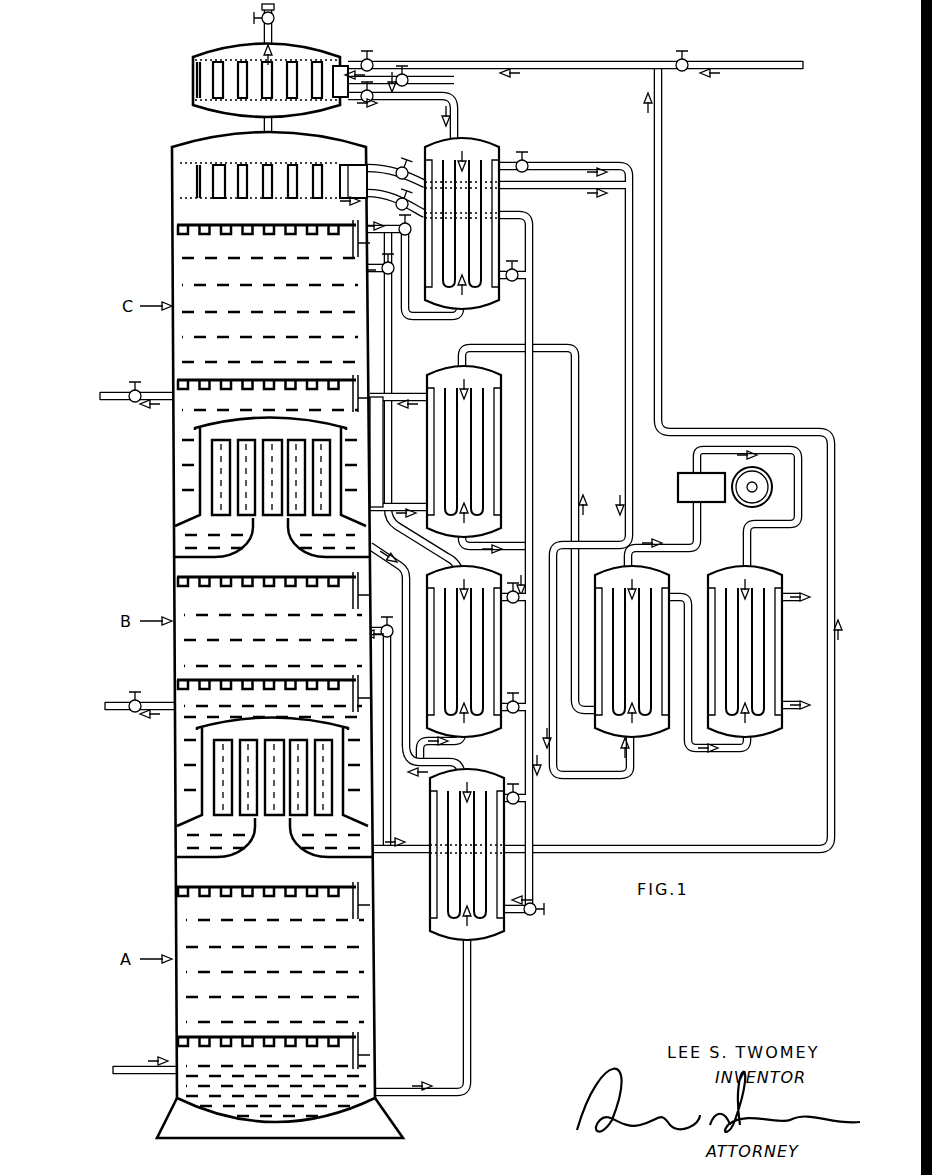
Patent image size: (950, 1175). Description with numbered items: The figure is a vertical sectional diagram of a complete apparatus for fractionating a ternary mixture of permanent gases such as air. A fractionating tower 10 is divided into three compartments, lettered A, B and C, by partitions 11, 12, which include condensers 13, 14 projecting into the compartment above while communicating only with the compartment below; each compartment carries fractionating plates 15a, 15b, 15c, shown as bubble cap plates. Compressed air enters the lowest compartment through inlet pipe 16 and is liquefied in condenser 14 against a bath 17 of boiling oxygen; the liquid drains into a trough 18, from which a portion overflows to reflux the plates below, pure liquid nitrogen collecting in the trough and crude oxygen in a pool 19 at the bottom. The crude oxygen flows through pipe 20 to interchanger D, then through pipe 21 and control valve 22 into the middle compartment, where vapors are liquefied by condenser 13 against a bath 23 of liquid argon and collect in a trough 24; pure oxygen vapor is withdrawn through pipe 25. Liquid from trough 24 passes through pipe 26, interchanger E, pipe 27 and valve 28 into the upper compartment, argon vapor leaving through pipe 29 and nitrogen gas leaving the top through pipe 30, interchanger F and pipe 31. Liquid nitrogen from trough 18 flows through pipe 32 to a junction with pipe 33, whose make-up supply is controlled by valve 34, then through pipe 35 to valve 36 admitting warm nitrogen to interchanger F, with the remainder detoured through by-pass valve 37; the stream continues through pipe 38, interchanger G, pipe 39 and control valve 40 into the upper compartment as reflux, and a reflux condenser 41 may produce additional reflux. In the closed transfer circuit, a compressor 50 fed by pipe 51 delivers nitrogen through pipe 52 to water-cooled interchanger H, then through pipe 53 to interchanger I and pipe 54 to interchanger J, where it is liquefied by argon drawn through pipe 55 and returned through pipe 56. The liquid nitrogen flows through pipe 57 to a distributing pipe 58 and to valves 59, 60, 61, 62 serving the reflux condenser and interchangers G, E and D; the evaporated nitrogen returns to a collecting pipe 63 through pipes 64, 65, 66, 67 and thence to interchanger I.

The fractionating tower 10 is at (200, 137).
The partition 11 is at (198, 520).
The partition 12 is at (205, 820).
The condenser 13 is at (198, 455).
The condenser 14 is at (205, 760).
The fractionating plates 15a is at (195, 888).
The fractionating plates 15b is at (182, 578).
The fractionating plates 15c is at (182, 226).
The inlet pipe 16 is at (124, 1076).
The bath of pure oxygen 17 is at (205, 733).
The trough 18 is at (215, 856).
The pool 19 is at (182, 1100).
The pipe 20 is at (473, 1048).
The pipe 21 is at (406, 769).
The control valve 22 is at (387, 625).
The bath of pure liquid argon 23 is at (198, 427).
The trough 24 is at (300, 558).
The pipe 25 is at (128, 708).
The pipe 26 is at (395, 566).
The pipe 27 is at (383, 466).
The valve 28 is at (388, 262).
The pipe 29 is at (116, 402).
The pipe 30 is at (276, 124).
The pipe 31 is at (275, 31).
The pipe 32 is at (398, 855).
The pipe 33 is at (748, 61).
The valve 34 is at (683, 77).
The pipe 35 is at (566, 61).
The valve 36 is at (374, 62).
The by-pass valve 37 is at (412, 82).
The pipe 38 is at (385, 102).
The pipe 39 is at (432, 322).
The control valve 40 is at (399, 226).
The reflux condenser 41 is at (196, 188).
The compressor 50 is at (677, 489).
The pipe 51 is at (693, 520).
The pipe 52 is at (693, 462).
The pipe 53 is at (687, 748).
The pipe 54 is at (588, 463).
The pipe 55 is at (404, 506).
The pipe 56 is at (402, 396).
The pipe 57 is at (460, 545).
The distributing pipe 58 is at (532, 237).
The valve 59 is at (396, 186).
The valve 60 is at (520, 280).
The valve 61 is at (512, 700).
The valve 62 is at (530, 917).
The collecting pipe 63 is at (627, 268).
The pipe 64 is at (571, 198).
The pipe 65 is at (583, 163).
The pipe 66 is at (513, 805).
The pipe 67 is at (513, 604).